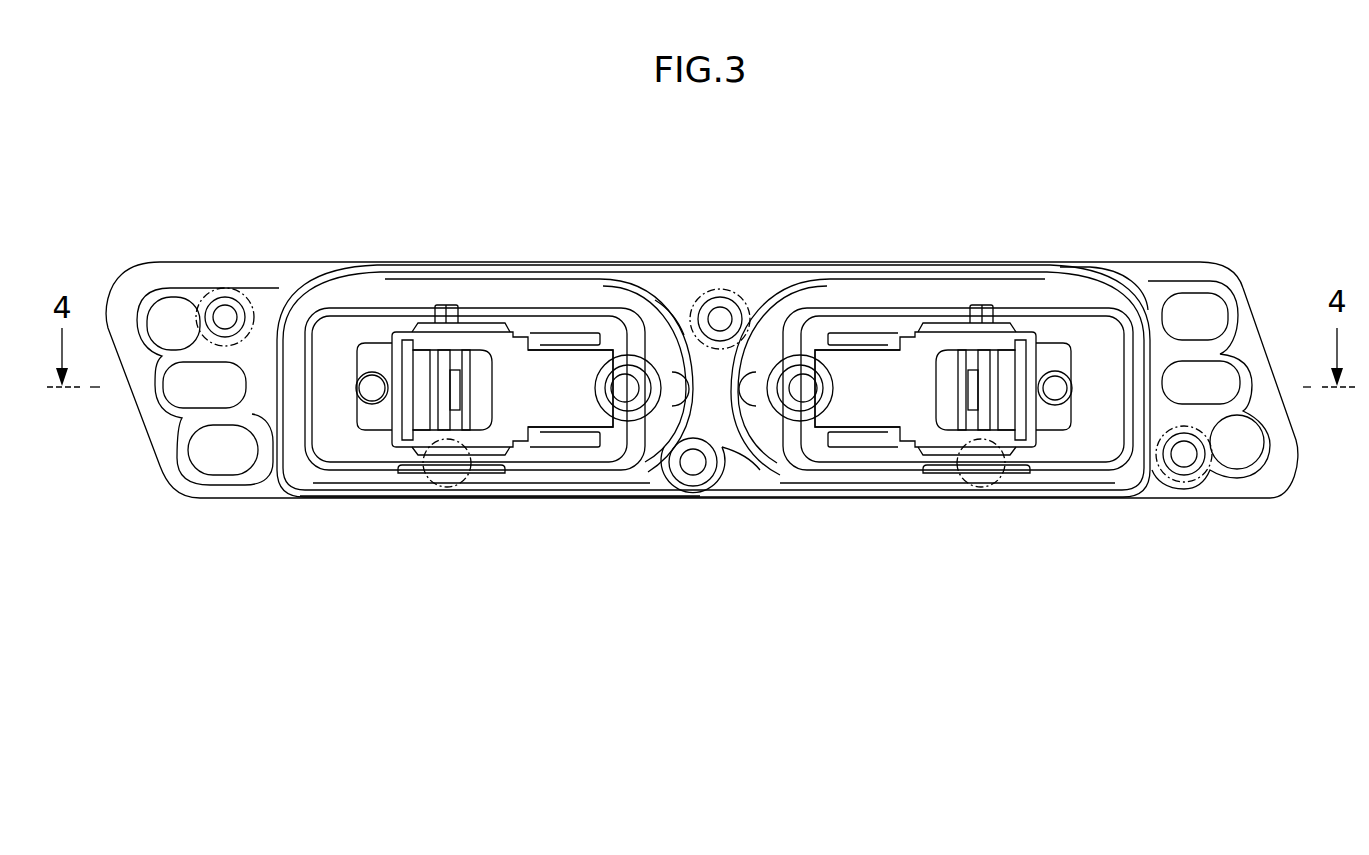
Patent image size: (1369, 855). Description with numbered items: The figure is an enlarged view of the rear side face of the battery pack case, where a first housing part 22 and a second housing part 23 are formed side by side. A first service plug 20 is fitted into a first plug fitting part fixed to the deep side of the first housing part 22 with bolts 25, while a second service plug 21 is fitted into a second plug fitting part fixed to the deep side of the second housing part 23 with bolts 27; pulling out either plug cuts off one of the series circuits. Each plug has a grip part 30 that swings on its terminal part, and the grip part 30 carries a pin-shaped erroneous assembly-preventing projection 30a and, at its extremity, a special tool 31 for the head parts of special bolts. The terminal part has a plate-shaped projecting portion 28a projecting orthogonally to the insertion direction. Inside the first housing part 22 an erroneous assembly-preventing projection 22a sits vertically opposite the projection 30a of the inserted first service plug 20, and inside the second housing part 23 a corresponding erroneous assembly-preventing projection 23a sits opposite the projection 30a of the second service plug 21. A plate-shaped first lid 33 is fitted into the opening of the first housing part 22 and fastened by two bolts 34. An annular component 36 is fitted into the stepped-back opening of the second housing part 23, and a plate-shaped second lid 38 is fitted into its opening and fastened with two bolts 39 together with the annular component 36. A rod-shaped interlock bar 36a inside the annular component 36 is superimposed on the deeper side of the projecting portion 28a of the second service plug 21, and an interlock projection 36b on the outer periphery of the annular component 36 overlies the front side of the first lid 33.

The first service plug 20 is at (1021, 310).
The second service plug 21 is at (424, 310).
The first housing part 22 is at (893, 262).
The erroneous assembly-preventing projection 22a is at (940, 474).
The second housing part 23 is at (565, 274).
The erroneous assembly-preventing projection 23a is at (490, 474).
The bolt 25 is at (757, 384).
The bolt 27 is at (678, 372).
The plate-shaped projecting portion 28a is at (570, 370).
The grip part 30 is at (493, 308).
The erroneous assembly-preventing projection 30a is at (447, 303).
The special tool 31 is at (1058, 378).
The first lid 33 is at (1110, 290).
The bolt 34 is at (727, 298).
The annular component 36 is at (341, 270).
The interlock bar 36a is at (649, 328).
The interlock projection 36b is at (722, 480).
The second lid 38 is at (350, 498).
The bolt 39 is at (222, 288).